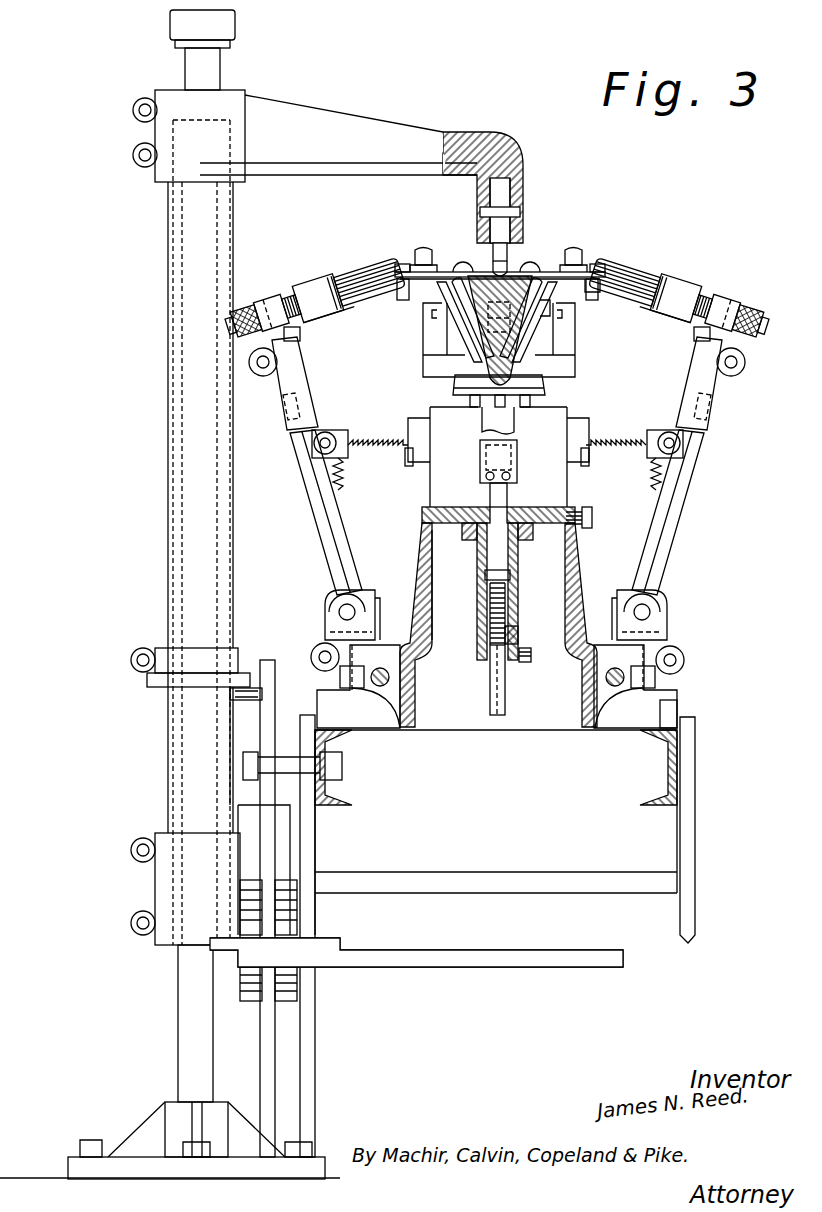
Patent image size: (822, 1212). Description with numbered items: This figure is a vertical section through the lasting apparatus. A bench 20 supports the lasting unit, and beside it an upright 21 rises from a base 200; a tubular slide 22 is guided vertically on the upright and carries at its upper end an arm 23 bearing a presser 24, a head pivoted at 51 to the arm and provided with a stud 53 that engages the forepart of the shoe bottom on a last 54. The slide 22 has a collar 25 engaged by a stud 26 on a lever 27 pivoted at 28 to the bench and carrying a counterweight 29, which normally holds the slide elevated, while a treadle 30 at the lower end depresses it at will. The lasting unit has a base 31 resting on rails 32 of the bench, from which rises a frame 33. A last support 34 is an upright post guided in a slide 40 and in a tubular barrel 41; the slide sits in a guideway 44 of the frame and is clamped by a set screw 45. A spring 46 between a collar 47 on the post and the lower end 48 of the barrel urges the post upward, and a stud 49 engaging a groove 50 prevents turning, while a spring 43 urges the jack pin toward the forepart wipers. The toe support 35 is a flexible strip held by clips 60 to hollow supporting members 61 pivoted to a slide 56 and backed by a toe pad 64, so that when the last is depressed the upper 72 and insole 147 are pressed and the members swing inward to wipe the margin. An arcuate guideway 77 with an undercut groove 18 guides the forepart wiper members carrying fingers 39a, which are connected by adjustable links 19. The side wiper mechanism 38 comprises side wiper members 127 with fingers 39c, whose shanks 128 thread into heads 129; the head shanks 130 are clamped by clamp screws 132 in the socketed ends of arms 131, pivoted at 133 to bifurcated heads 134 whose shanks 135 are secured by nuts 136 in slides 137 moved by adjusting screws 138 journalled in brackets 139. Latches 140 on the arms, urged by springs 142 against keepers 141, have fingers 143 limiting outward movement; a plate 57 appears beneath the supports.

The undercut arcuate groove 18 is at (592, 276).
The links 19 is at (423, 258).
The bench 20 is at (690, 842).
The upright 21 is at (185, 72).
The tubular slide 22 is at (175, 490).
The arm 23 is at (378, 130).
The presser 24 is at (522, 200).
The collar 25 is at (160, 648).
The stud 26 is at (250, 702).
The lever 27 is at (272, 740).
The pivot 28 is at (342, 767).
The counterweight 29 is at (250, 1002).
The treadle 30 is at (480, 968).
The base 31 is at (692, 705).
The rails 32 is at (360, 800).
The frame 33 is at (578, 562).
The last support 34 is at (505, 497).
The toe support 35 is at (488, 332).
The side wiper mechanism 38 is at (345, 262).
The forepart wiper fingers 39a is at (462, 262).
The side wiper fingers 39c is at (362, 268).
The slide 40 is at (480, 510).
The tubular barrel 41 is at (519, 606).
The spring 43 is at (512, 462).
The guideway 44 is at (440, 540).
The set screw 45 is at (592, 520).
The spring 46 is at (513, 632).
The collar 47 is at (513, 582).
The lower end of barrel 48 is at (488, 660).
The stud 49 is at (524, 656).
The groove 50 is at (500, 697).
The pivot 51 is at (517, 215).
The stud 53 is at (507, 240).
The last 54 is at (500, 330).
The slide 56 is at (470, 420).
The plate 57 is at (452, 383).
The clips 60 is at (455, 323).
The hollow supporting members 61 is at (445, 352).
The toe pad 64 is at (545, 310).
The upper 72 is at (516, 407).
The arcuate guideway 77 is at (402, 272).
The side wiper members 127 is at (312, 276).
The shanks 128 is at (302, 300).
The heads 129 is at (258, 316).
The shanks 130 is at (300, 337).
The arms 131 is at (298, 470).
The clamp screws 132 is at (263, 368).
The pivot 133 is at (345, 612).
The bifurcated heads 134 is at (330, 635).
The shanks 135 is at (325, 655).
The nuts 136 is at (340, 678).
The slides 137 is at (388, 660).
The adjusting screws 138 is at (380, 686).
The brackets 139 is at (380, 692).
The latches 140 is at (355, 430).
The keepers 141 is at (408, 462).
The springs 142 is at (343, 470).
The fingers 143 is at (418, 432).
The insole 147 is at (503, 270).
The base 200 is at (160, 1132).